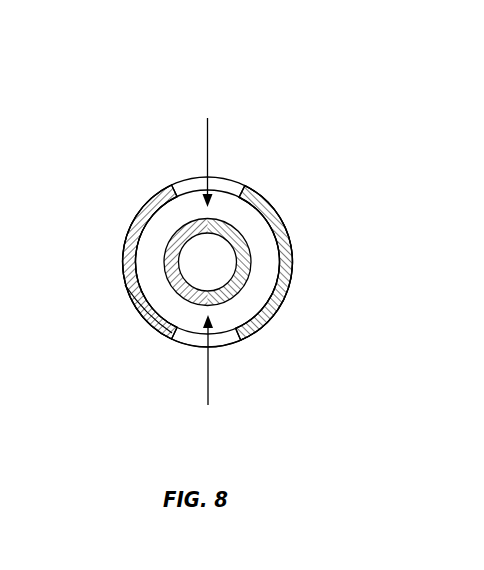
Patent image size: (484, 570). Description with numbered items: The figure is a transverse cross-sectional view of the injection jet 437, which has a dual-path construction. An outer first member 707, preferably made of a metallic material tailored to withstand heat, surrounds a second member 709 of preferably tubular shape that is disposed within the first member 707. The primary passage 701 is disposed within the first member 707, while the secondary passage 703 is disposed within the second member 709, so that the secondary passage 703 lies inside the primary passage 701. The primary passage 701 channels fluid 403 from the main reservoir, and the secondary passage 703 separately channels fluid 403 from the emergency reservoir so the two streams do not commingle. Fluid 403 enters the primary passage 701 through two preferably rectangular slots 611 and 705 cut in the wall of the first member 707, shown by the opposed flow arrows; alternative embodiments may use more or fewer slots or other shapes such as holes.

The injection jet 437 is at (93, 82).
The fluid 403 is at (208, 142).
The side slot 705 is at (230, 179).
The primary passage 701 is at (158, 227).
The secondary passage 703 is at (228, 257).
The second member 709 is at (250, 271).
The first member 707 is at (126, 287).
The side slot 611 is at (190, 345).